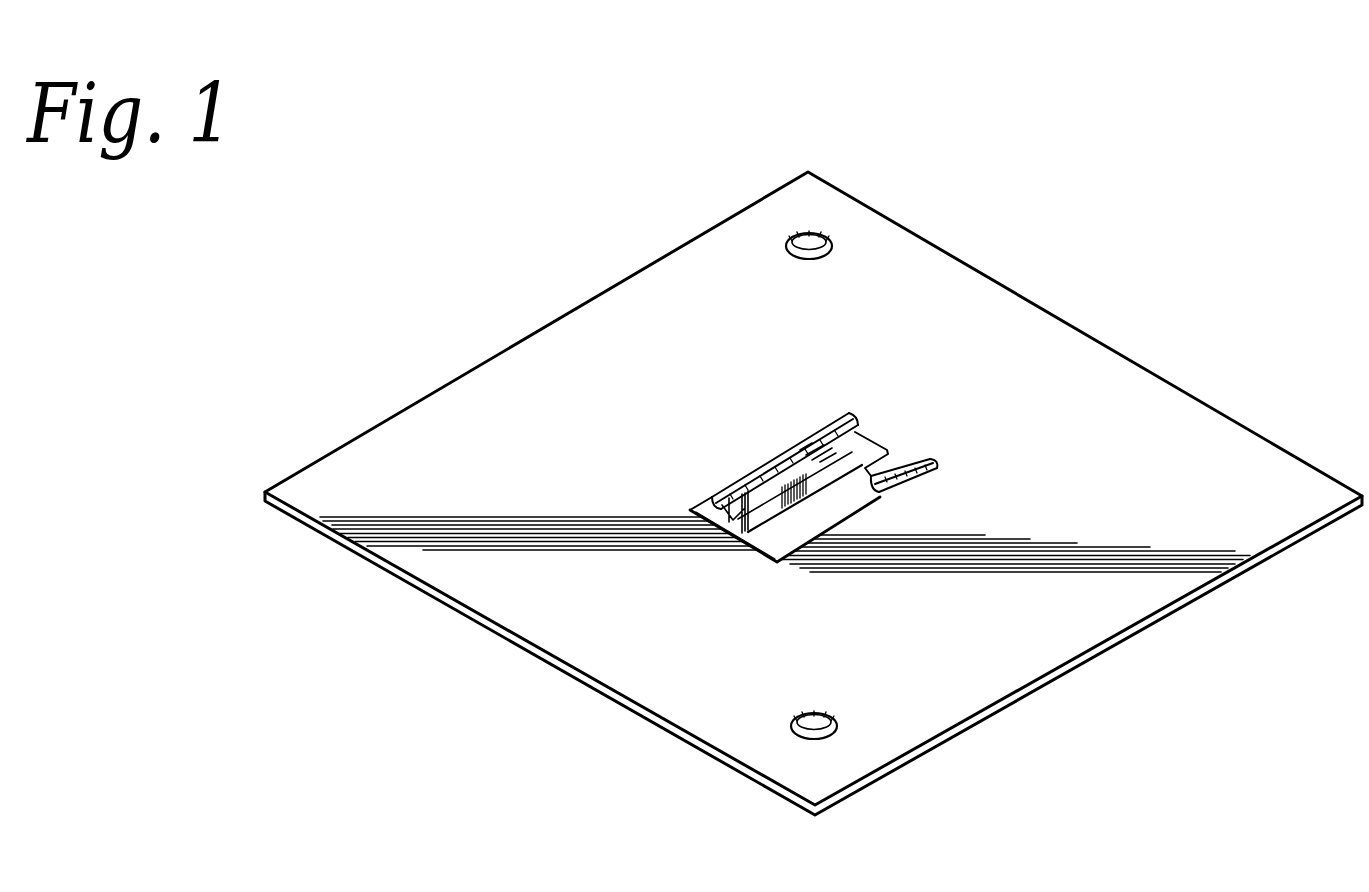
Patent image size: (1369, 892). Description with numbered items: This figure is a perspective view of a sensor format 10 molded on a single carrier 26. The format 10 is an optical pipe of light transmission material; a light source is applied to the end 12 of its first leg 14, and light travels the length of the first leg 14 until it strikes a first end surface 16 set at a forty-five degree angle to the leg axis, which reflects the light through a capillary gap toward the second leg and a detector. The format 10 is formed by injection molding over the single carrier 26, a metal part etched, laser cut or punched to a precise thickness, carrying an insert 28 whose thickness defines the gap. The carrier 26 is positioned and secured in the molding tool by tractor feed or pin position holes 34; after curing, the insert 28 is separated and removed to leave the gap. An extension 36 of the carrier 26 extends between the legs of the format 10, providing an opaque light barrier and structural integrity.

The sensor format 10 is at (765, 480).
The end of first leg 12 is at (709, 495).
The first leg 14 is at (747, 472).
The first end surface 16 is at (883, 444).
The single carrier 26 is at (1015, 300).
The insert 28 is at (898, 466).
The tractor feed or pin position holes 34 is at (832, 239).
The extension 36 is at (824, 500).